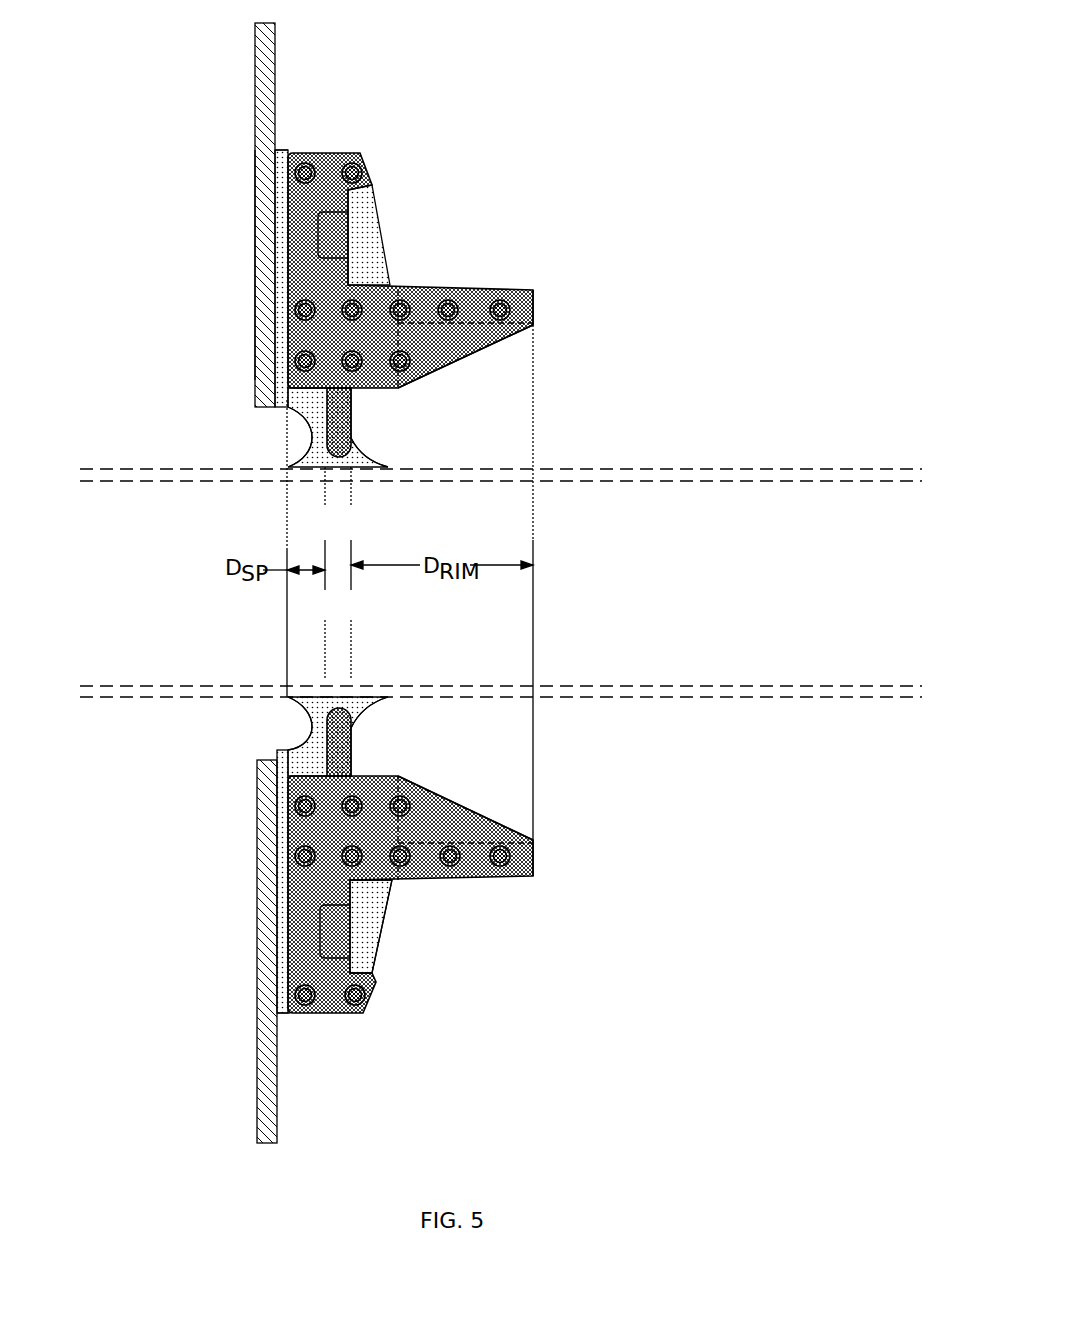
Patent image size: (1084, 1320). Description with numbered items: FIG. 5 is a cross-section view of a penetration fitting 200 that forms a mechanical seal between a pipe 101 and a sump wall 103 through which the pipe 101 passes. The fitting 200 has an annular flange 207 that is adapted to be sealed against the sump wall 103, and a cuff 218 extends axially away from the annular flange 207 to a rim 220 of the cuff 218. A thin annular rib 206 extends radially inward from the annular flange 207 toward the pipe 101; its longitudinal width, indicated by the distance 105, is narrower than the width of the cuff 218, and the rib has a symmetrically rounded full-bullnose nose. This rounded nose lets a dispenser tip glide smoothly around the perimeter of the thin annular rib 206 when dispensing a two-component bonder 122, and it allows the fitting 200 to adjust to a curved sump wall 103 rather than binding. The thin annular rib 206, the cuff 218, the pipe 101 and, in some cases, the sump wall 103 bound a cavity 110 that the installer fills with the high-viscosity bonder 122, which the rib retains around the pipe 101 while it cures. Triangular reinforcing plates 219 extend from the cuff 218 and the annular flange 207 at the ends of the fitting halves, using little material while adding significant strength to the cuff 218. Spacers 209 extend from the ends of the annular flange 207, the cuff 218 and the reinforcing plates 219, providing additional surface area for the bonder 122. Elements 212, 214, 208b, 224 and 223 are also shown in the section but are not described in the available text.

The fitting 200 is at (748, 57).
The pipe 101 is at (783, 470).
The sump wall 103 is at (255, 55).
The outer surface 212 is at (255, 250).
The cavity 110 is at (282, 414).
The bonder 122 is at (296, 152).
The upper block 214 is at (370, 392).
The annular flange 207 is at (383, 262).
The thin annular rib 206 is at (395, 437).
The lower block 208b is at (333, 930).
The spacers 209 is at (463, 866).
The cuff 218 is at (441, 299).
The reinforcing plates 219 is at (480, 350).
The rim 220 is at (545, 309).
The rim thickness 224 is at (579, 348).
The distance 105 is at (302, 490).
The lower wedge region 223 is at (370, 928).